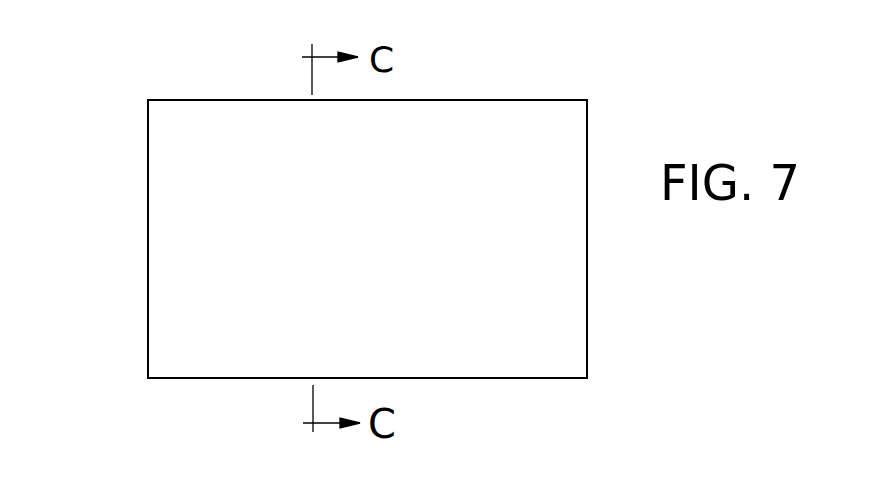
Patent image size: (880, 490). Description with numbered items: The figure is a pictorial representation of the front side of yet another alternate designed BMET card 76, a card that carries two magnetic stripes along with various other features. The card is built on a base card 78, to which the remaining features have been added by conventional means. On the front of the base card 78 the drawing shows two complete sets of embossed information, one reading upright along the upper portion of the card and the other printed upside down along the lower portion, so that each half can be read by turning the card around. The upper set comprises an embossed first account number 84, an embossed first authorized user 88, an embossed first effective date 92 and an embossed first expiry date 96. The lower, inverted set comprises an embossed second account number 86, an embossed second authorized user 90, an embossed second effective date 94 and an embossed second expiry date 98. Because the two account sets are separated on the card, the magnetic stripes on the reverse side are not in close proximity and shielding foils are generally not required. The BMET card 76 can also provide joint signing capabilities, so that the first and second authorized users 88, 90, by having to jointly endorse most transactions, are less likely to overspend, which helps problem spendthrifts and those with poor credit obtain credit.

The BMET card 76 is at (115, 246).
The base card 78 is at (146, 360).
The embossed first account number 84 is at (258, 157).
The embossed second account number 86 is at (567, 284).
The embossed first authorized user 88 is at (172, 190).
The embossed second authorized user 90 is at (562, 312).
The embossed first effective date 92 is at (417, 158).
The embossed second effective date 94 is at (288, 283).
The embossed first expiry date 96 is at (547, 157).
The embossed second expiry date 98 is at (175, 283).